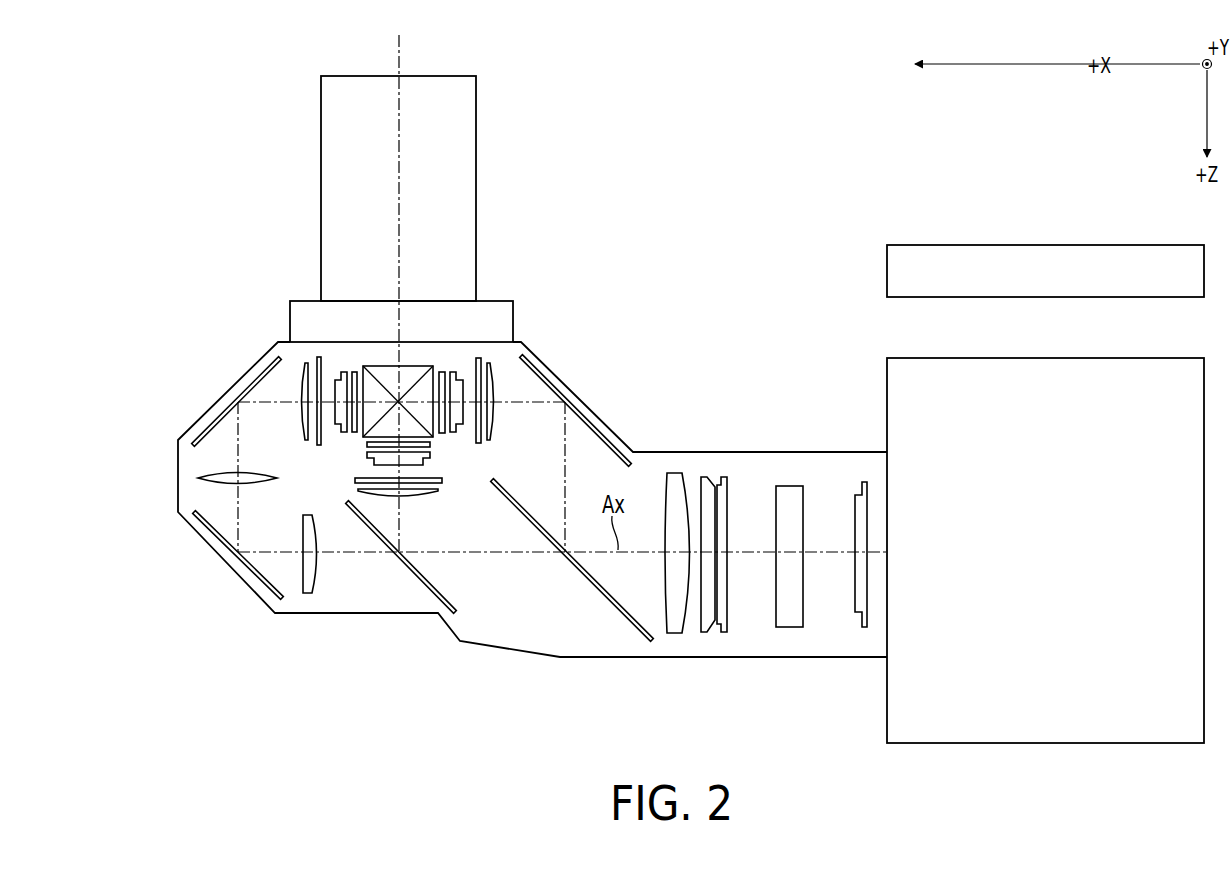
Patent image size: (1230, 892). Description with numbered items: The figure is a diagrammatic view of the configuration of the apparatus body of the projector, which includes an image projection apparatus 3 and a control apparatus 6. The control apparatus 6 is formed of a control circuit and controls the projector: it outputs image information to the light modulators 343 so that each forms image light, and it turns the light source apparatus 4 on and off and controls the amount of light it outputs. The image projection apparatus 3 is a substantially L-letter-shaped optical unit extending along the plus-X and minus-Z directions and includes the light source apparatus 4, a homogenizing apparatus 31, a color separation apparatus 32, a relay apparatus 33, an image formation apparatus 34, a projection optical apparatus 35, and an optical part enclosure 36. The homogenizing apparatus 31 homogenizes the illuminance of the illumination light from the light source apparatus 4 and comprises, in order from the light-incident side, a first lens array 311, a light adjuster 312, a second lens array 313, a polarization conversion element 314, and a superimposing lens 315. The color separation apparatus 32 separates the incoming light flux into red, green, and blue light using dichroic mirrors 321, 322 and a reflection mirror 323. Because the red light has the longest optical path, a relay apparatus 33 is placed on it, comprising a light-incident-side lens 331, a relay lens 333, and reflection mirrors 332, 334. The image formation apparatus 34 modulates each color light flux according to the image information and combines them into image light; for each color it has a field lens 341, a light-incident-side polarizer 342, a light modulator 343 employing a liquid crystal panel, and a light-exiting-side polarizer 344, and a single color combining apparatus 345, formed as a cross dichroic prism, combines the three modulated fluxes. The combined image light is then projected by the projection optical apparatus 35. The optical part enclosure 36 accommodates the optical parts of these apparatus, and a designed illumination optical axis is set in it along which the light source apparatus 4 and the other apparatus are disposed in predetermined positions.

The image projection apparatus 3 is at (168, 137).
The light source apparatus 4 is at (1110, 358).
The control apparatus 6 is at (1110, 245).
The homogenizing apparatus 31 is at (760, 623).
The first lens array 311 is at (858, 495).
The light adjuster 312 is at (792, 486).
The second lens array 313 is at (725, 495).
The polarization conversion element 314 is at (702, 478).
The superimposing lens 315 is at (677, 480).
The color separation apparatus 32 is at (557, 610).
The dichroic mirror 321 is at (612, 613).
The dichroic mirror 322 is at (418, 580).
The reflection mirror 323 is at (551, 385).
The relay apparatus 33 is at (335, 593).
The light-incident-side lens 331 is at (307, 595).
The reflection mirror 332 is at (253, 580).
The relay lens 333 is at (218, 477).
The reflection mirror 334 is at (260, 375).
The image formation apparatus 34 is at (333, 358).
The field lens 341 is at (304, 418).
The light-incident-side polarizer 342 is at (315, 443).
The light modulator 343 is at (285, 488).
The light-exiting-side polarizer 344 is at (440, 372).
The color combining apparatus 345 is at (432, 435).
The projection optical apparatus 35 is at (333, 198).
The optical part enclosure 36 is at (210, 548).